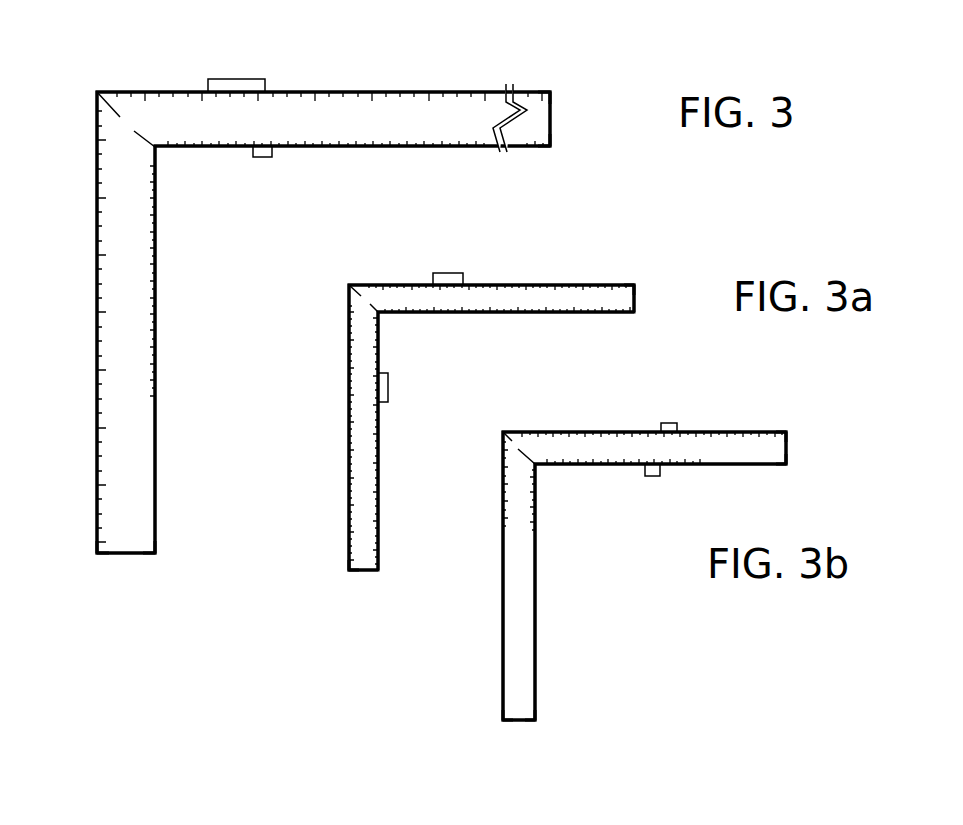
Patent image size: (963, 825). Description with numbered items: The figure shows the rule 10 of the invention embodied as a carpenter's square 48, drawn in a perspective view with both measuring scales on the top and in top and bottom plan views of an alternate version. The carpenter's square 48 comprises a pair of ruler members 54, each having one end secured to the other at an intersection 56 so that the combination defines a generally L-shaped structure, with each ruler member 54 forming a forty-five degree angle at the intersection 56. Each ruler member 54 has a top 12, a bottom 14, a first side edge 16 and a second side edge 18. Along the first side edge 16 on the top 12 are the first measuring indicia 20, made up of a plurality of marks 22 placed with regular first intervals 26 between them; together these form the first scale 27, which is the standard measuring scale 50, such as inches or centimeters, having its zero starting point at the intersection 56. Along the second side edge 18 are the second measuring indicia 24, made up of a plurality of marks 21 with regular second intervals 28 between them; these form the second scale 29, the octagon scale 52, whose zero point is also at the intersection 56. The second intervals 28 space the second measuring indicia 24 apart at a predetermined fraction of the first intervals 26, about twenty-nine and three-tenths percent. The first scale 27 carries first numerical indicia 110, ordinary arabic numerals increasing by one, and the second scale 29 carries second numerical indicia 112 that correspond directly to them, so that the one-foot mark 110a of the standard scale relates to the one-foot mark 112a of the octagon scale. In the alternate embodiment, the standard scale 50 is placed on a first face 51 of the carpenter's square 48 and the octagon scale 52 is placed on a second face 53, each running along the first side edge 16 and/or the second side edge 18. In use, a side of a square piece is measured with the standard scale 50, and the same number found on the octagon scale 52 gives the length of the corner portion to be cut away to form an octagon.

In FIG. 3a, the rule 10 is at (491, 427).
In FIG. 3b, the rule 10 is at (615, 542).
In FIG. 3, the top 12 is at (466, 110).
In FIG. 3a, the top 12 is at (368, 535).
In FIG. 3b, the bottom 14 is at (530, 562).
In FIG. 3, the first side edge 16 is at (446, 89).
In FIG. 3a, the first side edge 16 is at (602, 283).
In FIG. 3b, the first side edge 16 is at (758, 430).
In FIG. 3, the second side edge 18 is at (468, 149).
In FIG. 3a, the second side edge 18 is at (606, 314).
In FIG. 3b, the second side edge 18 is at (782, 466).
In FIG. 3, the first measuring indicia 20 is at (361, 299).
In FIG. 3a, the first measuring indicia 20 is at (499, 273).
In FIG. 3, the marks 21 is at (395, 147).
In FIG. 3b, the marks 21 is at (720, 432).
In FIG. 3, the marks 22 is at (195, 91).
In FIG. 3a, the marks 22 is at (402, 308).
In FIG. 3, the second measuring indicia 24 is at (346, 268).
In FIG. 3b, the second measuring indicia 24 is at (651, 450).
In FIG. 3, the first intervals 26 is at (240, 80).
In FIG. 3a, the first intervals 26 is at (453, 273).
In FIG. 3, the first scale 27 is at (343, 345).
In FIG. 3a, the first scale 27 is at (632, 287).
In FIG. 3, the second intervals 28 is at (262, 157).
In FIG. 3b, the second intervals 28 is at (669, 423).
In FIG. 3, the second scale 29 is at (401, 370).
In FIG. 3b, the second scale 29 is at (778, 452).
In FIG. 3, the carpenter's square 48 is at (323, 278).
In FIG. 3, the standard measuring scale 50 is at (553, 91).
In FIG. 3a, the standard measuring scale 50 is at (537, 425).
In FIG. 3a, the first face 51 is at (368, 443).
In FIG. 3, the octagon scale 52 is at (553, 144).
In FIG. 3b, the octagon scale 52 is at (684, 561).
In FIG. 3b, the second face 53 is at (521, 525).
In FIG. 3, the ruler member 54 is at (553, 117).
In FIG. 3a, the ruler member 54 is at (636, 297).
In FIG. 3b, the ruler member 54 is at (790, 441).
In FIG. 3, the intersection 56 is at (120, 112).
In FIG. 3a, the intersection 56 is at (377, 308).
In FIG. 3b, the intersection 56 is at (503, 433).
In FIG. 3, the first numerical indicia 110 is at (372, 91).
In FIG. 3, the 1 foot 110a is at (545, 90).
In FIG. 3, the second numerical indicia 112 is at (300, 148).
In FIG. 3, the 1 ft 112a is at (347, 148).